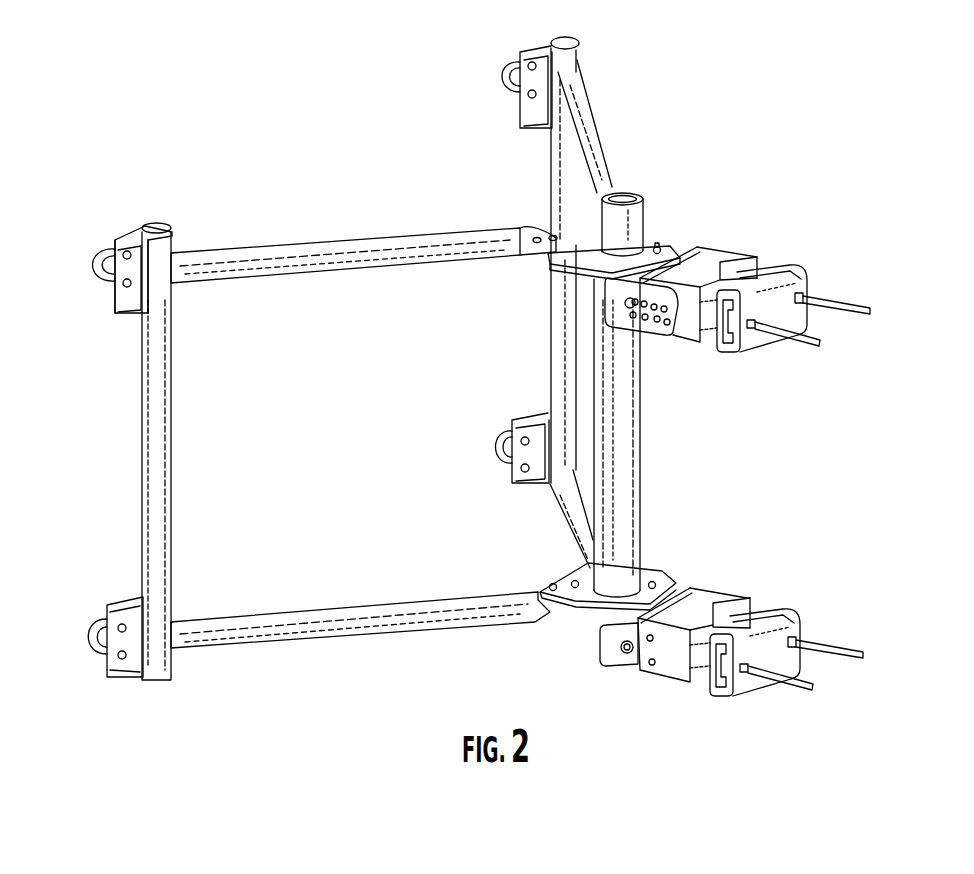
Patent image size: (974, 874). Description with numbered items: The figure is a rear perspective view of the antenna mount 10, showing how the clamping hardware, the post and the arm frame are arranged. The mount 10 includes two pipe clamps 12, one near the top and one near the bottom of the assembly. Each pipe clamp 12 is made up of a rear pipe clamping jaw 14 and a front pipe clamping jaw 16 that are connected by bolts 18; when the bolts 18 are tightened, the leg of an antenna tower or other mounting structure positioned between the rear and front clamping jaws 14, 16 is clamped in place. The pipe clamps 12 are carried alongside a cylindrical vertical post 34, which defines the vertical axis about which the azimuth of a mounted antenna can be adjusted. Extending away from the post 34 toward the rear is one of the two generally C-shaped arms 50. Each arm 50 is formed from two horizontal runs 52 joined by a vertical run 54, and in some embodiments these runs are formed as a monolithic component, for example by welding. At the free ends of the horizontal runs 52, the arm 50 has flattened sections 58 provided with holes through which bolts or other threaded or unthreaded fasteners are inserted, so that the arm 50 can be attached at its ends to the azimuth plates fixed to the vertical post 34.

The antenna mount 10 is at (866, 165).
The pipe clamp 12 is at (836, 276).
The rear pipe clamping jaw 14 is at (777, 312).
The front pipe clamping jaw 16 is at (745, 249).
The bolt 18 is at (712, 327).
The vertical post 34 is at (640, 477).
The C-shaped arm 50 is at (640, 142).
The horizontal run 52 is at (410, 244).
The vertical run 54 is at (143, 490).
The flattened section 58 is at (516, 262).